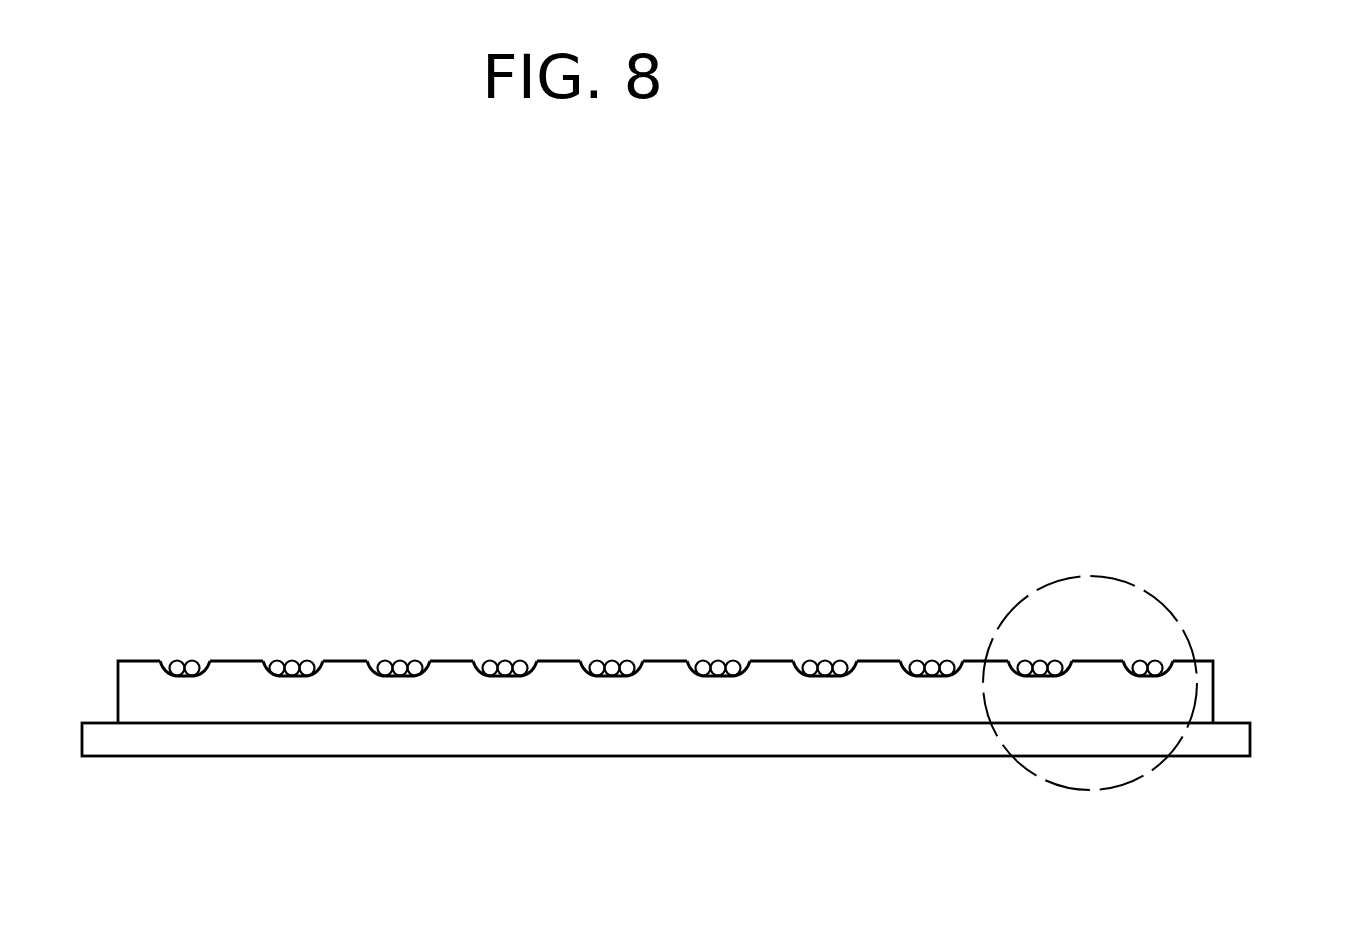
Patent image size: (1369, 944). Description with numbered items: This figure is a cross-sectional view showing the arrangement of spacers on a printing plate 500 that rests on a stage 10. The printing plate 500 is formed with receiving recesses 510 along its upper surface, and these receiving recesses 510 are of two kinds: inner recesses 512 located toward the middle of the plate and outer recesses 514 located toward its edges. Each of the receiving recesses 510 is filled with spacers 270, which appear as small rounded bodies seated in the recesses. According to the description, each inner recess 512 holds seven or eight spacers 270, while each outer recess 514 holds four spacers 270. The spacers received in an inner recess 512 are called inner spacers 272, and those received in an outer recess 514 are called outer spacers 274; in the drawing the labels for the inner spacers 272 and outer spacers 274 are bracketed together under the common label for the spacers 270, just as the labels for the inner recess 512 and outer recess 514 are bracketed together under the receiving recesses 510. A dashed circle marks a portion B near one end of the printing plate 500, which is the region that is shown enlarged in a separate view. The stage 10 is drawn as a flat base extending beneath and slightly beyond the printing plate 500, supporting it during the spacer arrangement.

The printing plate 500 is at (1256, 614).
The stage 10 is at (939, 737).
The receiving recesses 510 is at (320, 822).
The outer recesses 514 is at (186, 677).
The inner recesses 512 is at (292, 677).
The spacers 270 is at (327, 516).
The outer spacers 274 is at (190, 661).
The inner spacers 272 is at (291, 661).
The portion B is at (1100, 578).